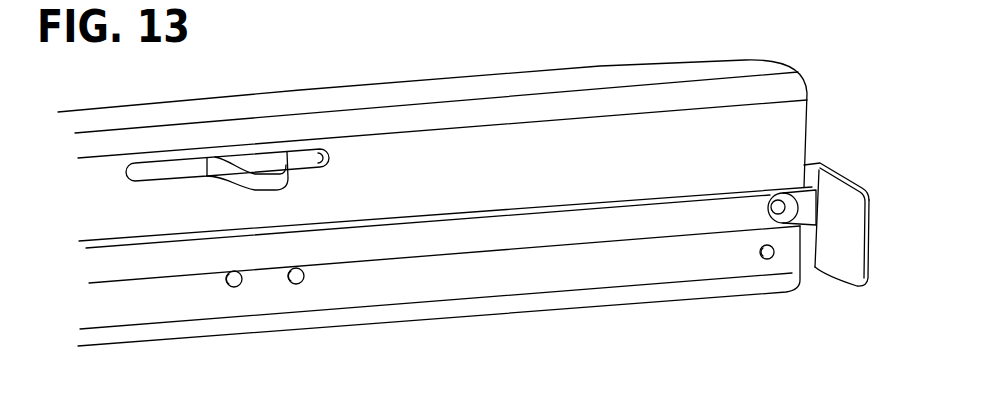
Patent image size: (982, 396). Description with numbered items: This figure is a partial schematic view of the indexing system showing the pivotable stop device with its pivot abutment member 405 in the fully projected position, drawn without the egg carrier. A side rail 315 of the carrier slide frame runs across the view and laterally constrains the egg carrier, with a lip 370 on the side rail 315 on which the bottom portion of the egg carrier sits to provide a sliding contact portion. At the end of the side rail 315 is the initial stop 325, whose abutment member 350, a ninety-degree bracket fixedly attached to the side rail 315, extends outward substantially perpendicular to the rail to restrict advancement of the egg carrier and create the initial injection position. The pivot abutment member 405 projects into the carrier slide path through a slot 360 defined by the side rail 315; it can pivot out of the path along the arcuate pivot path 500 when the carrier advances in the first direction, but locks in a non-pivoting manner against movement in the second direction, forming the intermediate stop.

The side rail 315 is at (500, 88).
The initial stop 325 is at (875, 167).
The abutment member 350 is at (830, 257).
The slot 360 is at (150, 176).
The lip 370 is at (776, 190).
The pivot abutment member 405 is at (270, 165).
The arcuate pivot path 500 is at (214, 190).